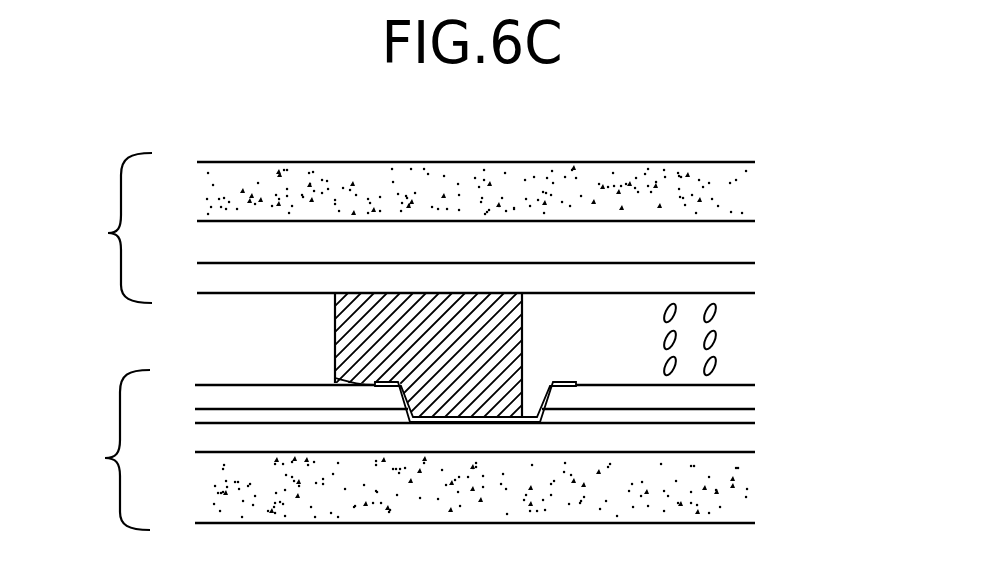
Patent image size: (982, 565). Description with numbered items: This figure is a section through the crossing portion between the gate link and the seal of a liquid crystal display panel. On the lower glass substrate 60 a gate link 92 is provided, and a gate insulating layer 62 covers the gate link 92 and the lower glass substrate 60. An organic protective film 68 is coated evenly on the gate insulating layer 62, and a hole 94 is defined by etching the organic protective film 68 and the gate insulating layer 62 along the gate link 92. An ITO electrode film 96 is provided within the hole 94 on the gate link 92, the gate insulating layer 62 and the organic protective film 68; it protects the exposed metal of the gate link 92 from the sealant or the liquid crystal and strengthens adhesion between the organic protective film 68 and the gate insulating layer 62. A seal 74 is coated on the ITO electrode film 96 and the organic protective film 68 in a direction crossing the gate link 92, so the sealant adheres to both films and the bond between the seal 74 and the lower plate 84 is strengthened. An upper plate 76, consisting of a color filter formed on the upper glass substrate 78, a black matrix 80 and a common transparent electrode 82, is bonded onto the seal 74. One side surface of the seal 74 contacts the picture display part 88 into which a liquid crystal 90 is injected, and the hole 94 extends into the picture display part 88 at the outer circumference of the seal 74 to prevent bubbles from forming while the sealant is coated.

The lower glass substrate 60 is at (752, 496).
The gate insulating layer 62 is at (203, 417).
The organic protective film 68 is at (203, 392).
The seal 74 is at (335, 301).
The upper plate 76 is at (110, 228).
The upper glass substrate 78 is at (752, 190).
The black matrix 80 is at (752, 246).
The common transparent electrode 82 is at (752, 285).
The lower plate 84 is at (109, 450).
The picture display part 88 is at (742, 320).
The liquid crystal 90 is at (715, 338).
The gate link 92 is at (746, 447).
The hole 94 is at (335, 378).
The ITO electrode film 96 is at (480, 423).